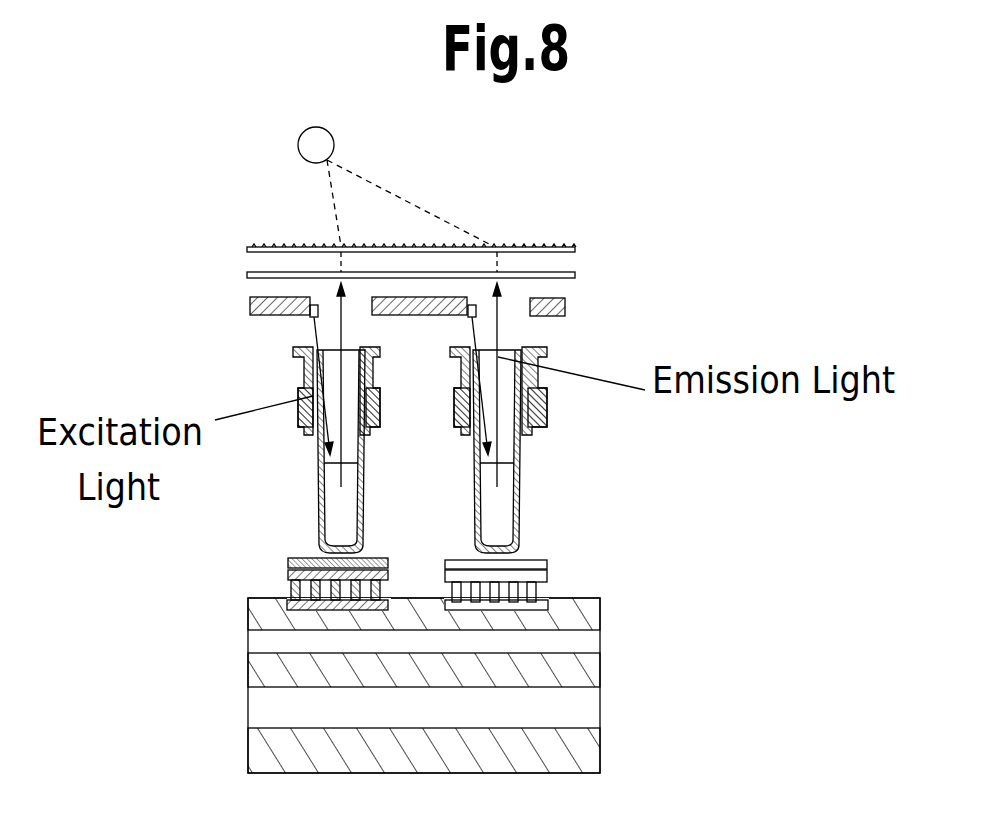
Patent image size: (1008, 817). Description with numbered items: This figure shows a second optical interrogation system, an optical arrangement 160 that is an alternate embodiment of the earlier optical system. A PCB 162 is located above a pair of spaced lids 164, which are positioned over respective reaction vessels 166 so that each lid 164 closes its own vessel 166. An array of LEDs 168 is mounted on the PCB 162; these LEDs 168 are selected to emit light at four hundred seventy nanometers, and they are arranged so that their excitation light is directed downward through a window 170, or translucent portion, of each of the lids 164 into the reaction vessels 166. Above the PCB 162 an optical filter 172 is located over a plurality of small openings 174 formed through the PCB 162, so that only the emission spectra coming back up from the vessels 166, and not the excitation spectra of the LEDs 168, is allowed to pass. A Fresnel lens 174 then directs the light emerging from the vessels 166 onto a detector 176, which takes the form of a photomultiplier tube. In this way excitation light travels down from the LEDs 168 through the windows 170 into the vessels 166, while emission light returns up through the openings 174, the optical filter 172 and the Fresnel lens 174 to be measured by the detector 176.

The optical arrangement 160 is at (424, 442).
The PCB 162 is at (250, 305).
The lid 164 is at (536, 422).
The reaction vessel 166 is at (532, 388).
The LED 168 is at (312, 318).
The window 170 is at (500, 465).
The optical filter 172 is at (572, 277).
The Fresnel lens 174 is at (572, 250).
The detector 176 is at (325, 138).